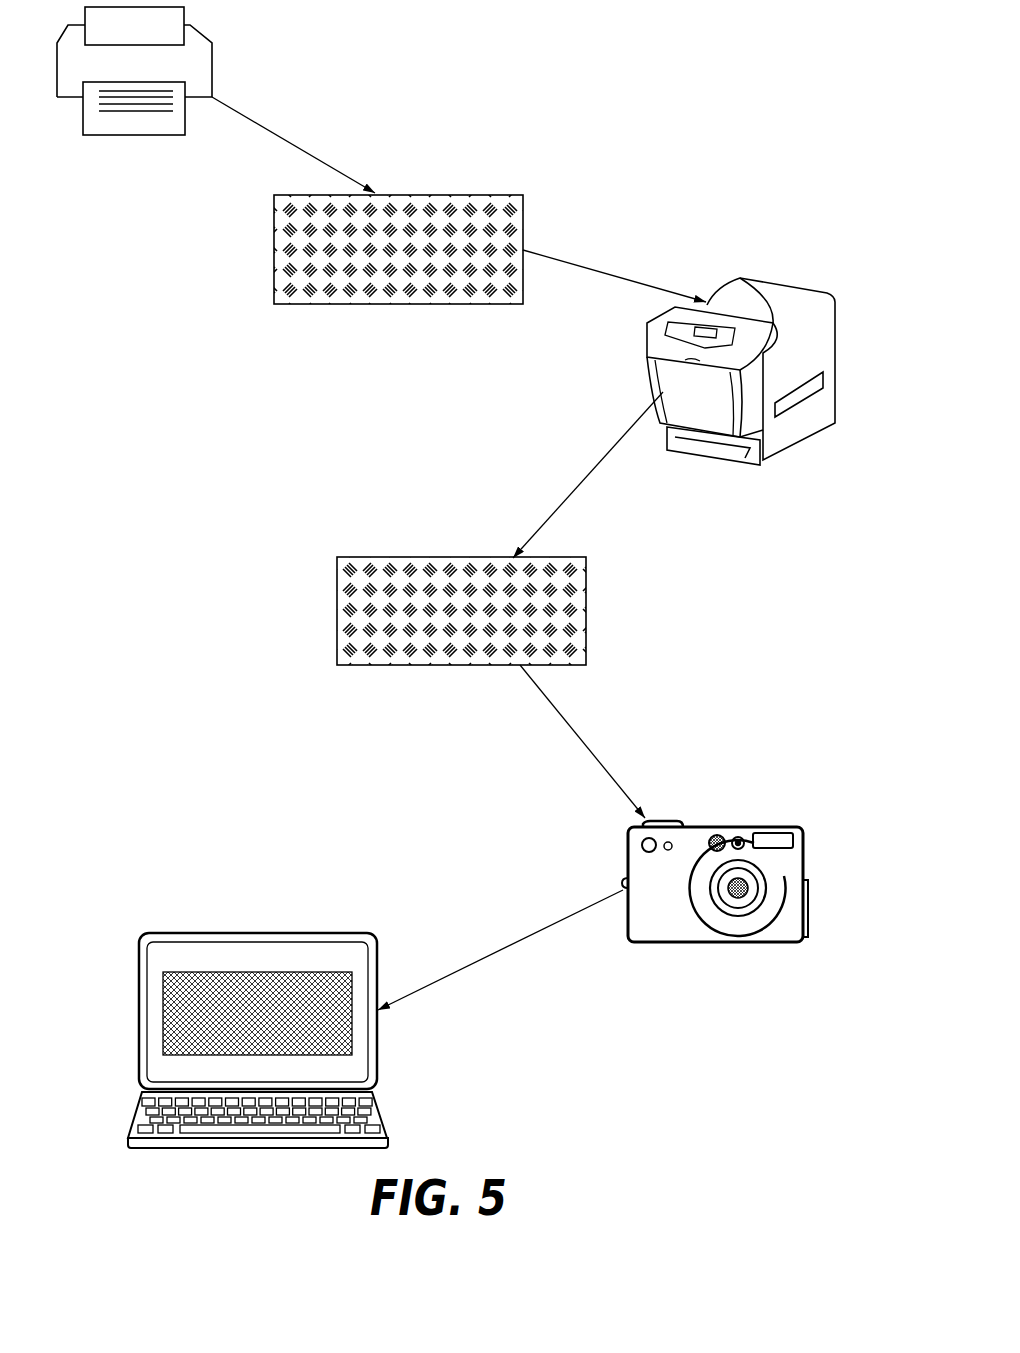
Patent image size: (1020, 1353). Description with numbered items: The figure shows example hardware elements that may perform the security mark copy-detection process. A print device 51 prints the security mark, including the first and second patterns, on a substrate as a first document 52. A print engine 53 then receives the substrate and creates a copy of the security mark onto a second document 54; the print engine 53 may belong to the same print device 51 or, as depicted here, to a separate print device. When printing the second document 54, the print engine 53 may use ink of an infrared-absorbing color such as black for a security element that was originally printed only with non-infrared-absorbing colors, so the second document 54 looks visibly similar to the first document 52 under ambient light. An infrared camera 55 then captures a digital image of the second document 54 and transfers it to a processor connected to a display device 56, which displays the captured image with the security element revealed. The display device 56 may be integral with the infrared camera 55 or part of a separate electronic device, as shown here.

The print device 51 is at (212, 70).
The first document 52 is at (274, 250).
The print engine 53 is at (835, 337).
The second document 54 is at (337, 610).
The infrared camera 55 is at (808, 858).
The display device 56 is at (138, 972).